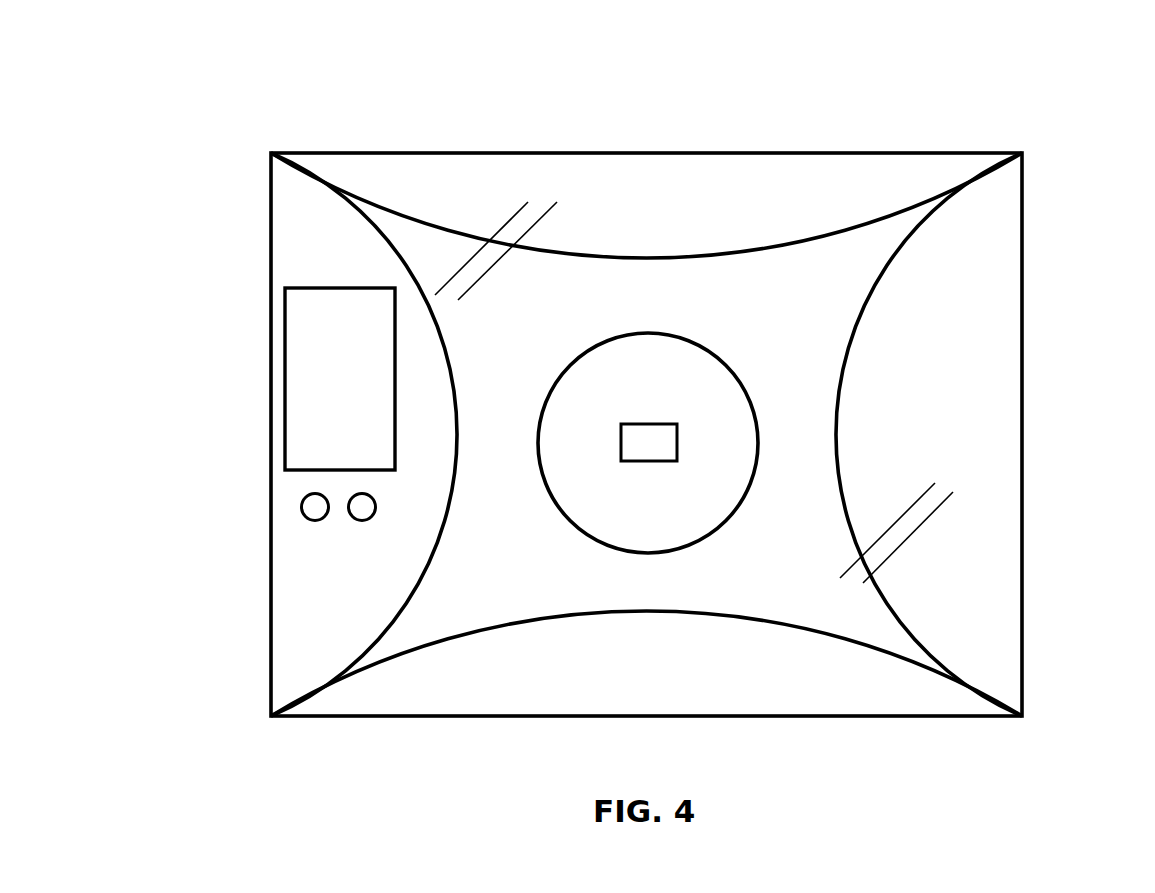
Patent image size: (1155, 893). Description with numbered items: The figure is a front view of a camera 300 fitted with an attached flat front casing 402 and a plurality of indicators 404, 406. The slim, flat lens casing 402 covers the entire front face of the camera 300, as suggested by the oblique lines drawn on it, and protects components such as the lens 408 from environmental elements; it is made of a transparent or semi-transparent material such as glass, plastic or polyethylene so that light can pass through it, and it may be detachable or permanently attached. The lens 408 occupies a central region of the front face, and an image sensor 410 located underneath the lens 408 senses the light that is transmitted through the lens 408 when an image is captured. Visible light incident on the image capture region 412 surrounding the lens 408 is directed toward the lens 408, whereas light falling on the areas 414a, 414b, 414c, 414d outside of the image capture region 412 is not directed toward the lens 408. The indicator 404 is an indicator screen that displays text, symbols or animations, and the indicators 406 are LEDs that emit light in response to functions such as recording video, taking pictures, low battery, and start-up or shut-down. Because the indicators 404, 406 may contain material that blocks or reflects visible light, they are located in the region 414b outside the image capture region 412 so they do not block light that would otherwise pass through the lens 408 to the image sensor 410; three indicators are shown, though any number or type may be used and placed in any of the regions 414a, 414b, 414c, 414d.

The camera 300 is at (1082, 113).
The flat front casing 402 is at (1005, 561).
The indicator 404 is at (306, 361).
The indicators 406 is at (343, 524).
The lens 408 is at (738, 353).
The image sensor 410 is at (606, 445).
The image capture region 412 is at (721, 275).
The area outside of the image capture region 414a is at (479, 235).
The area outside of the image capture region 414b is at (314, 633).
The area outside of the image capture region 414c is at (920, 414).
The area outside of the image capture region 414d is at (438, 690).